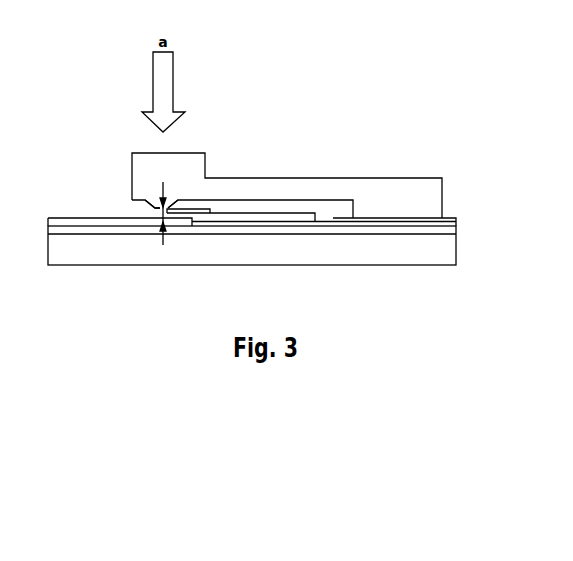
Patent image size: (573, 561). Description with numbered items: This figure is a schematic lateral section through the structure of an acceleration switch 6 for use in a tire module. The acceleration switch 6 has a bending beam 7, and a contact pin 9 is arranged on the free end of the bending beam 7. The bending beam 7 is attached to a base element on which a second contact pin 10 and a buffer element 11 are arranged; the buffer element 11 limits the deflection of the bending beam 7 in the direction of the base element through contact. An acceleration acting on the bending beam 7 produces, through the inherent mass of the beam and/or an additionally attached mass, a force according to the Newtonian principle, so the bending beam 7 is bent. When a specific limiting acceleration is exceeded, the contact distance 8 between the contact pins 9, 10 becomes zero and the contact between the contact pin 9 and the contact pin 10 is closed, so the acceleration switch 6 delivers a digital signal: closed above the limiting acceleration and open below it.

The acceleration switch 6 is at (103, 280).
The bending beam 7 is at (310, 183).
The contact distance 8 is at (174, 214).
The contact pin 9 is at (155, 211).
The contact pin 10 is at (158, 218).
The buffer element 11 is at (292, 221).